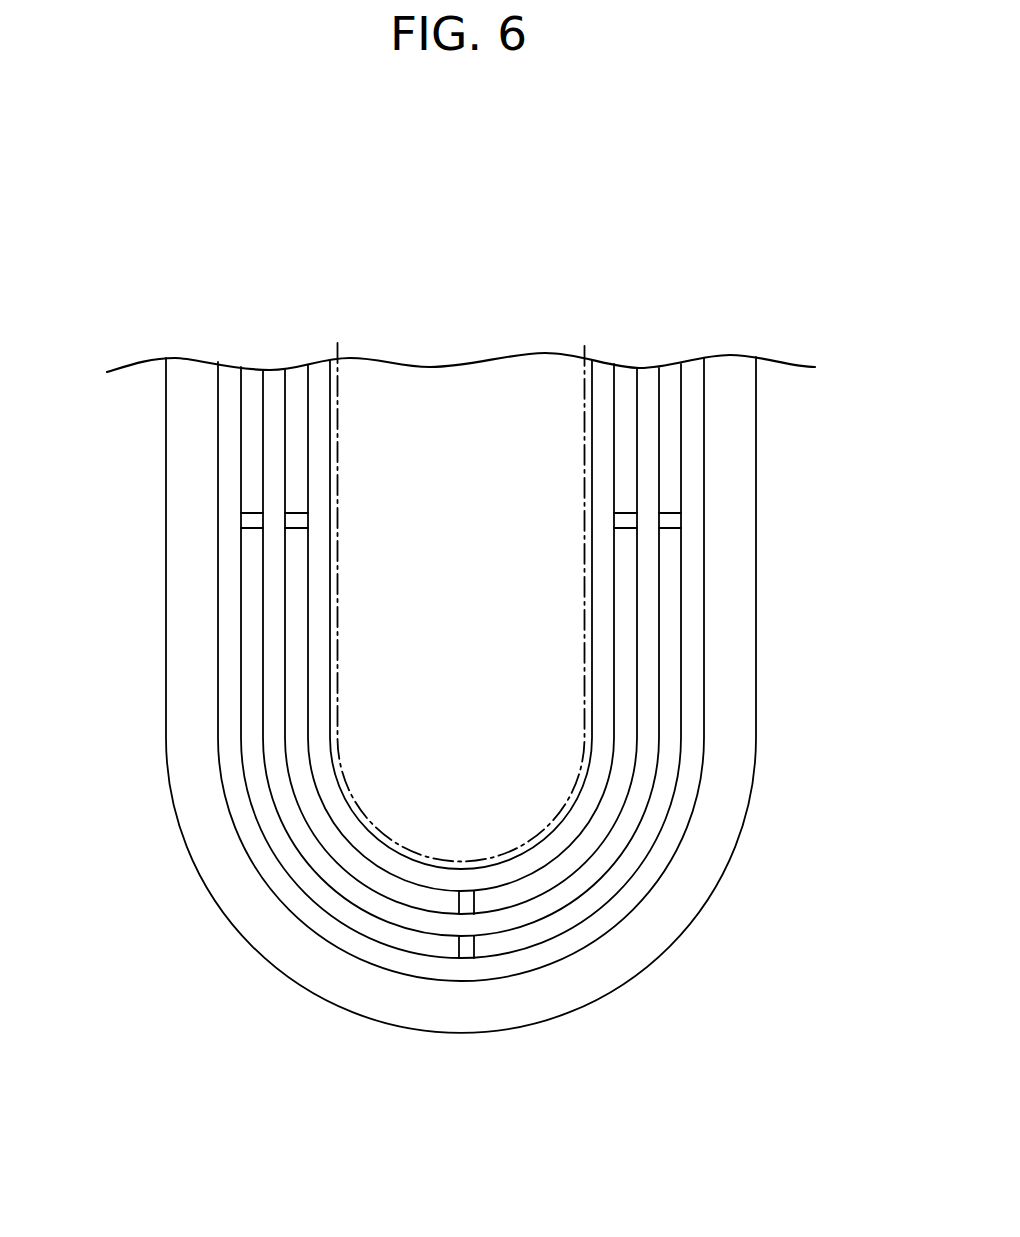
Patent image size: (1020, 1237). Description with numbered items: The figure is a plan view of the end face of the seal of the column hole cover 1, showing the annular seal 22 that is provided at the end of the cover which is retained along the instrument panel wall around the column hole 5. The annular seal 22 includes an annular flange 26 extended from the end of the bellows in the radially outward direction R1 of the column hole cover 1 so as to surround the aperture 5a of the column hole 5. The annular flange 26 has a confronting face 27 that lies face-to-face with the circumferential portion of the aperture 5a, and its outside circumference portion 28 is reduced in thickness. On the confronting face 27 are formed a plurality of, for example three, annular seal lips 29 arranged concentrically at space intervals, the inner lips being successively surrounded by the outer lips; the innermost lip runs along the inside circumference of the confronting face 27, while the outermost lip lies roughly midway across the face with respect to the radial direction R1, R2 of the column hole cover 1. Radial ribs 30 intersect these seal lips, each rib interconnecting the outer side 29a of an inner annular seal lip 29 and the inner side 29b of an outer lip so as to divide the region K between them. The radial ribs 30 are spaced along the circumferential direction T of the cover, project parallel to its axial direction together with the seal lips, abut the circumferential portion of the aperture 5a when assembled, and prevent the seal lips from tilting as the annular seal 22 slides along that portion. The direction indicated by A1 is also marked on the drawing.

The column hole cover 1 is at (533, 695).
The column hole 5 is at (461, 566).
The aperture 5a is at (338, 583).
The annular seal 22 is at (747, 586).
The annular flange 26 is at (532, 695).
The confronting face 27 is at (650, 923).
The outside circumference portion 28 is at (738, 850).
The annular seal lips 29 is at (559, 659).
The outer side of inner annular seal lip 29a is at (623, 625).
The inner side of outer annular seal lip 29b is at (587, 565).
The radial ribs 30 is at (250, 513).
The region K is at (548, 884).
The radially outward direction R1 is at (148, 922).
The radial direction R2 is at (92, 1000).
The circumferential direction T is at (128, 1000).
The axial direction A1 is at (460, 118).